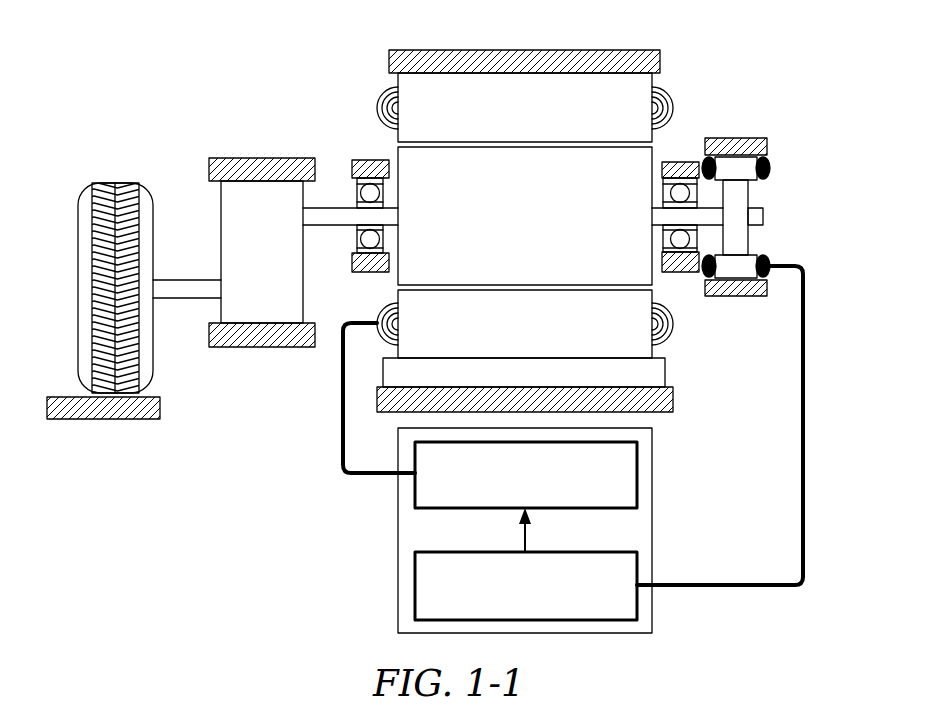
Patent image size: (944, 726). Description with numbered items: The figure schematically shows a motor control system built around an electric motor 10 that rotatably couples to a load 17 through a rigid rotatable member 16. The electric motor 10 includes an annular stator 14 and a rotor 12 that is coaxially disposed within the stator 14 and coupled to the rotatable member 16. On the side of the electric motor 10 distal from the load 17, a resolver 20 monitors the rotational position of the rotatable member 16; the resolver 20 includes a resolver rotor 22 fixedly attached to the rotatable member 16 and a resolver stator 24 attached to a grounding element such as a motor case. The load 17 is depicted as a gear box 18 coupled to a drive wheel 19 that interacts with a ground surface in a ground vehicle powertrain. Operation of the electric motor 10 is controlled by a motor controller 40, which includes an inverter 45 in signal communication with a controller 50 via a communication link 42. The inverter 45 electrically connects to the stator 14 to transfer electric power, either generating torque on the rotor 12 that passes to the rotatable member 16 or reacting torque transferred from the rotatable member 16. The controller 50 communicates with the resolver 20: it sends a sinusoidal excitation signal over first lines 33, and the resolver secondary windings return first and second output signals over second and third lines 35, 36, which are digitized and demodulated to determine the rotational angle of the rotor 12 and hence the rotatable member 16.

The electric motor 10 is at (166, 56).
The rotor 12 is at (538, 226).
The stator 14 is at (538, 119).
The rigid rotatable member 16 is at (340, 208).
The load 17 is at (149, 243).
The gear box 18 is at (276, 266).
The drive wheel 19 is at (117, 183).
The resolver 20 is at (780, 215).
The resolver rotor 22 is at (748, 236).
The resolver stator 24 is at (757, 165).
The first lines 33 is at (573, 425).
The second line 35 is at (573, 425).
The third line 36 is at (792, 415).
The motor controller 40 is at (569, 530).
The communication link 42 is at (528, 540).
The inverter 45 is at (538, 487).
The controller 50 is at (538, 589).